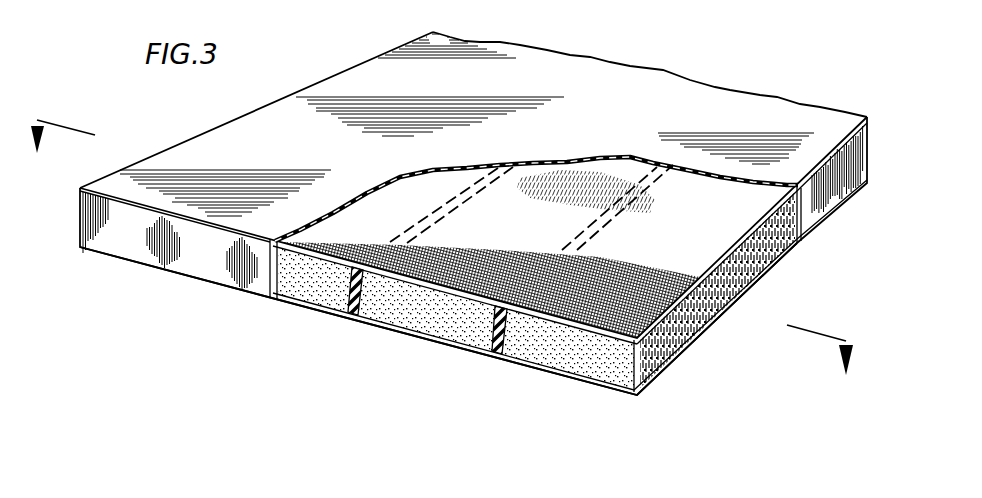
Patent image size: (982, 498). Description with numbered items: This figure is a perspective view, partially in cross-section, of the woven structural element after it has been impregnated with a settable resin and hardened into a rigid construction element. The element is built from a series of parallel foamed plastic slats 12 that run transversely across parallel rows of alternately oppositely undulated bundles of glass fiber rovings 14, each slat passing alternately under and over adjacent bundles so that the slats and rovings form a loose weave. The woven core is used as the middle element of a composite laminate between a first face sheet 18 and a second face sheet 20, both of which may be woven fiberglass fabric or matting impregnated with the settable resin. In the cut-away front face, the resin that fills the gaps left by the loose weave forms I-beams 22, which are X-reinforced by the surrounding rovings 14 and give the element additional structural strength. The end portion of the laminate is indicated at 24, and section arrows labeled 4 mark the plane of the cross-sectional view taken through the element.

The foamed plastic slat 12 is at (562, 350).
The bundle of glass fiber rovings 14 is at (723, 308).
The first face sheet 18 is at (715, 208).
The second face sheet 20 is at (660, 375).
The I-beam of resin 22 is at (360, 310).
The side slab 24 is at (220, 265).
The section line 4- 4 is at (444, 239).